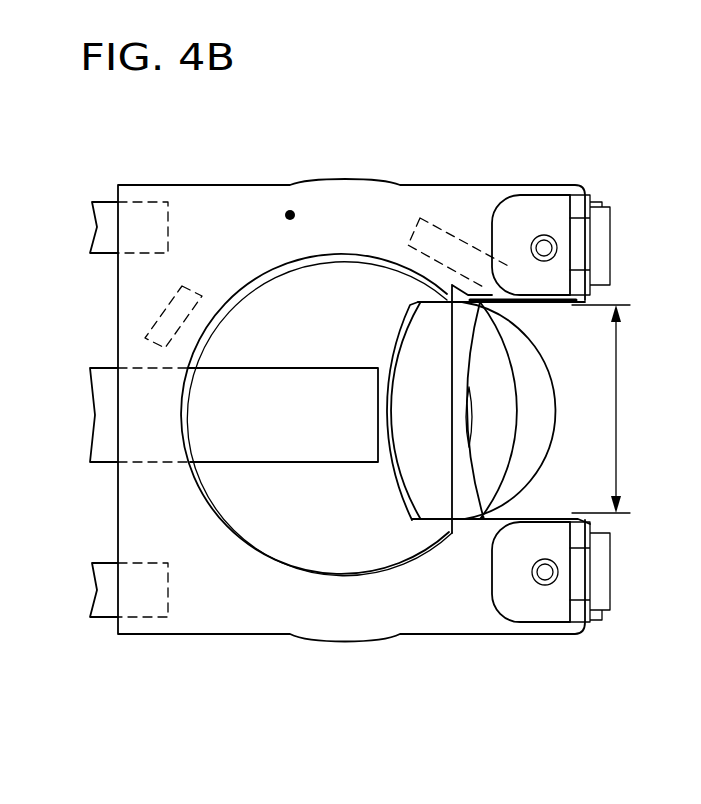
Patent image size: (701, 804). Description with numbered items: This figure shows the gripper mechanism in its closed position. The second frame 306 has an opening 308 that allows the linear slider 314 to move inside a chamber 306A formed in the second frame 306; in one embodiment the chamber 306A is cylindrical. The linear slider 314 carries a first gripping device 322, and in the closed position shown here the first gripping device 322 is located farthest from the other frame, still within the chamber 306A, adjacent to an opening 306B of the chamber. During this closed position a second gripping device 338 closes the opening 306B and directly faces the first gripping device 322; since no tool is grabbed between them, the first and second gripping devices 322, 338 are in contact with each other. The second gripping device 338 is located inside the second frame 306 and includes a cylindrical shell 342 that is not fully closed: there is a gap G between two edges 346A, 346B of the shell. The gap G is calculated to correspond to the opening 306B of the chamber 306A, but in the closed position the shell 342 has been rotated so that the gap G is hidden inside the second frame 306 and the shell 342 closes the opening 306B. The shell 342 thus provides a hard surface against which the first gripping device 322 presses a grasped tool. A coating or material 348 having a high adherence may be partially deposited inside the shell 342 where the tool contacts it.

The second frame 306 is at (466, 643).
The chamber 306A is at (352, 513).
The opening of the chamber 306B is at (616, 412).
The opening 308 is at (140, 409).
The linear slider 314 is at (283, 418).
The first gripping device 322 is at (381, 321).
The second gripping device 338 is at (535, 410).
The cylindrical shell 342 is at (543, 398).
The first edge of the shell 346A is at (168, 462).
The second edge of the shell 346B is at (414, 225).
The high-adherence coating or material 348 is at (498, 380).
The gap G is at (290, 215).